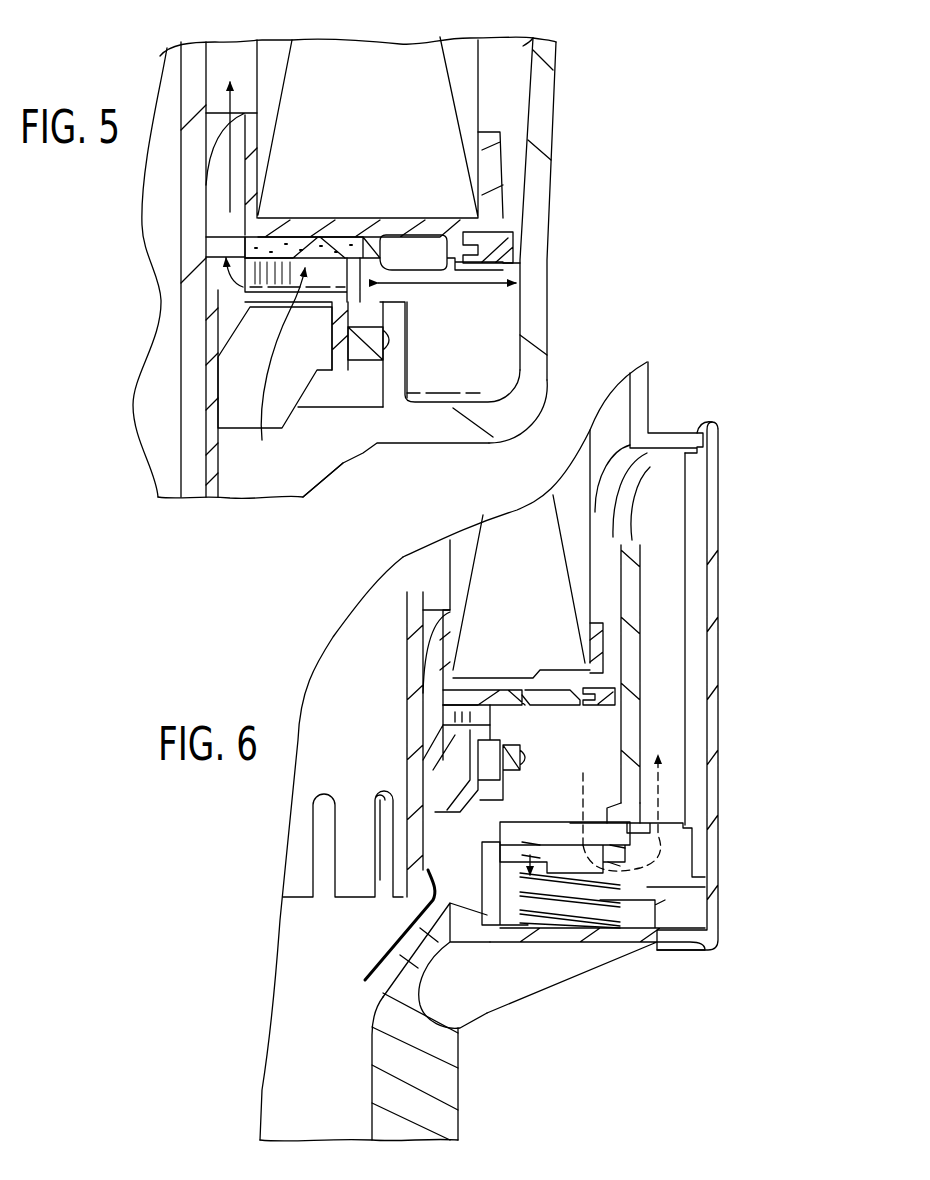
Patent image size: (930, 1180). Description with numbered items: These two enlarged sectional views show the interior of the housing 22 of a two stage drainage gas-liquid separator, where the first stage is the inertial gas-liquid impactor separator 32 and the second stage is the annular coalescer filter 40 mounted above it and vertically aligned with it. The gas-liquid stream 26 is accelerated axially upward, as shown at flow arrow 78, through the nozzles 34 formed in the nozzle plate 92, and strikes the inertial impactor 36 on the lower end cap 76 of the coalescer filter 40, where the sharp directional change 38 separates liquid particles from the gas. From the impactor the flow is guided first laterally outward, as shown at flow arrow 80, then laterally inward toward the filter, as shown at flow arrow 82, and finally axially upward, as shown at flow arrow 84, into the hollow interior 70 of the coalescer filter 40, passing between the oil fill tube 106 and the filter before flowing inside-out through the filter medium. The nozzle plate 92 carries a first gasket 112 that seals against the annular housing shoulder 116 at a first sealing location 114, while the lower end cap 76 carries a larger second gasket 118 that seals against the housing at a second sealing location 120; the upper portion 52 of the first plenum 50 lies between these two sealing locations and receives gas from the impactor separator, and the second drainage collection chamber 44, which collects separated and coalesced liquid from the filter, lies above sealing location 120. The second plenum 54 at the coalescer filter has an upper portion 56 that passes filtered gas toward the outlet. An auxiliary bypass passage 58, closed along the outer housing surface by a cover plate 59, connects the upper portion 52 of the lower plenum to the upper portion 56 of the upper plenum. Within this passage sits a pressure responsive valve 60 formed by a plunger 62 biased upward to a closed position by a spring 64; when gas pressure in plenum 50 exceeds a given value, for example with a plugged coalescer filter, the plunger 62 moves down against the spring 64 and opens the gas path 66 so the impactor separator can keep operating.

In FIG. 5, the housing 22 is at (557, 97).
In FIG. 6, the housing 22 is at (650, 373).
In FIG. 5, the gas-liquid stream 26 is at (262, 440).
In FIG. 6, the gas-liquid stream 26 is at (427, 1005).
In FIG. 5, the inertial gas-liquid impactor separator 32 is at (341, 231).
In FIG. 6, the inertial gas-liquid impactor separator 32 is at (491, 686).
In FIG. 5, the nozzles 34 is at (293, 292).
In FIG. 6, the nozzles 34 is at (440, 752).
In FIG. 5, the inertial impactor 36 is at (293, 238).
In FIG. 6, the inertial impactor 36 is at (470, 691).
In FIG. 5, the sharp directional change 38 is at (328, 248).
In FIG. 5, the coalescer filter 40 is at (405, 50).
In FIG. 6, the coalescer filter 40 is at (507, 527).
In FIG. 5, the second drainage collection chamber 44 is at (515, 185).
In FIG. 6, the second drainage collection chamber 44 is at (608, 598).
In FIG. 5, the first plenum 50 is at (502, 360).
In FIG. 6, the first plenum 50 is at (575, 787).
In FIG. 5, the upper portion of first plenum 52 is at (503, 310).
In FIG. 6, the upper portion of first plenum 52 is at (597, 745).
In FIG. 5, the second plenum 54 is at (517, 48).
In FIG. 6, the second plenum 54 is at (607, 558).
In FIG. 6, the upper portion of second plenum 56 is at (613, 440).
In FIG. 6, the auxiliary bypass passage 58 is at (667, 655).
In FIG. 6, the cover plate 59 is at (720, 623).
In FIG. 6, the pressure responsive valve 60 is at (560, 820).
In FIG. 6, the plunger 62 is at (553, 955).
In FIG. 6, the spring 64 is at (617, 927).
In FIG. 6, the gas path 66 is at (663, 815).
In FIG. 5, the hollow interior 70 is at (235, 45).
In FIG. 6, the hollow interior 70 is at (462, 540).
In FIG. 5, the lower end cap 76 is at (407, 213).
In FIG. 6, the lower end cap 76 is at (537, 678).
In FIG. 5, the flow arrow 78 is at (303, 322).
In FIG. 6, the flow arrow 78 is at (463, 755).
In FIG. 5, the flow arrow 80 is at (437, 270).
In FIG. 5, the flow arrow 82 is at (424, 288).
In FIG. 5, the flow arrow 84 is at (213, 245).
In FIG. 5, the nozzle plate 92 is at (267, 300).
In FIG. 6, the nozzle plate 92 is at (435, 735).
In FIG. 5, the oil fill tube 106 is at (193, 73).
In FIG. 6, the oil fill tube 106 is at (408, 592).
In FIG. 5, the first gasket 112 is at (360, 350).
In FIG. 6, the first gasket 112 is at (517, 757).
In FIG. 5, the first sealing location 114 is at (383, 355).
In FIG. 5, the annular housing shoulder 116 is at (398, 347).
In FIG. 5, the second gasket 118 is at (503, 240).
In FIG. 6, the second gasket 118 is at (608, 683).
In FIG. 5, the second sealing location 120 is at (505, 255).